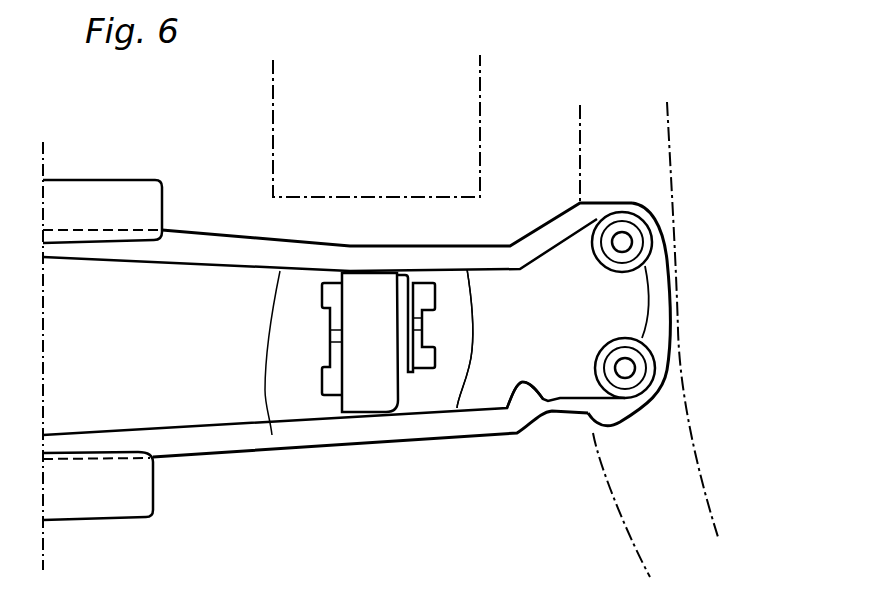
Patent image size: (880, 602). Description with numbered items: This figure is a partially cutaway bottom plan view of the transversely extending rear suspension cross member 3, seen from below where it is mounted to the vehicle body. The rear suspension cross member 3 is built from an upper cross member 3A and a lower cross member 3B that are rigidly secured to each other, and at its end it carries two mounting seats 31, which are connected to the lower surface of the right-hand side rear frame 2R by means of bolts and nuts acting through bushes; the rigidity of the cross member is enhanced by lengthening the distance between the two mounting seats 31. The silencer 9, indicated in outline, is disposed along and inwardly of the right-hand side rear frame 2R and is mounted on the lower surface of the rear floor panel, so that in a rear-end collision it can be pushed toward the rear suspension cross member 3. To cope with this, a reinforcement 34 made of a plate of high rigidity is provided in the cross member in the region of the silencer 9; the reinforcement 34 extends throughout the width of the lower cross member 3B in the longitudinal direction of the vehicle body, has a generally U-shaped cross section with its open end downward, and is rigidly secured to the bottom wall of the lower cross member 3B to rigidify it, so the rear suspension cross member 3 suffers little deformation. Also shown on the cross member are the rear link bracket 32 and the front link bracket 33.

The silencer 9 is at (453, 128).
The right-hand side rear frame 2R is at (642, 185).
The rear suspension cross member 3 is at (216, 457).
The upper cross member 3A is at (438, 395).
The lower cross member 3B is at (492, 390).
The mounting seat 31 is at (640, 273).
The rear link bracket 32 is at (148, 190).
The front link bracket 33 is at (137, 503).
The reinforcement 34 is at (363, 393).